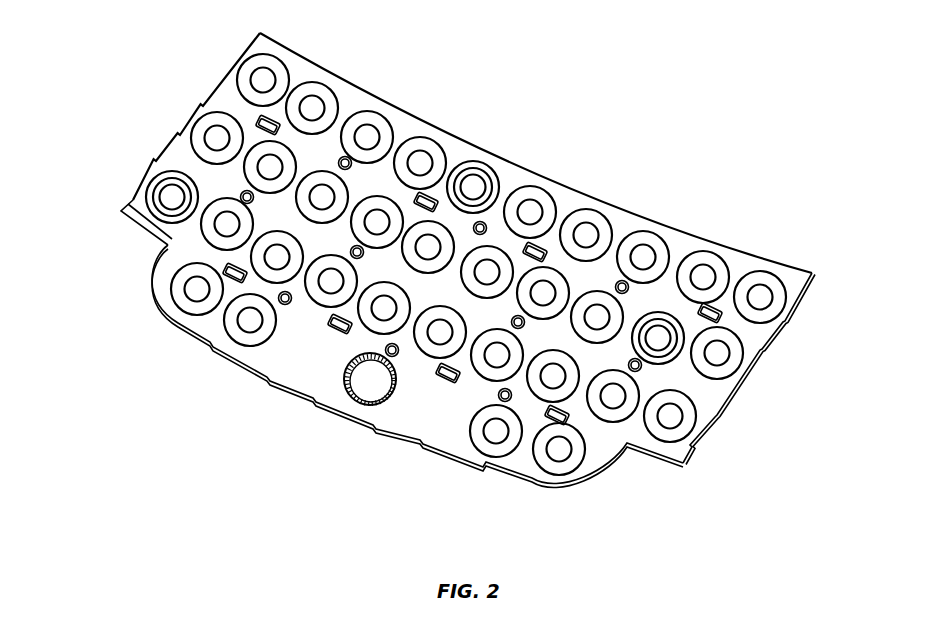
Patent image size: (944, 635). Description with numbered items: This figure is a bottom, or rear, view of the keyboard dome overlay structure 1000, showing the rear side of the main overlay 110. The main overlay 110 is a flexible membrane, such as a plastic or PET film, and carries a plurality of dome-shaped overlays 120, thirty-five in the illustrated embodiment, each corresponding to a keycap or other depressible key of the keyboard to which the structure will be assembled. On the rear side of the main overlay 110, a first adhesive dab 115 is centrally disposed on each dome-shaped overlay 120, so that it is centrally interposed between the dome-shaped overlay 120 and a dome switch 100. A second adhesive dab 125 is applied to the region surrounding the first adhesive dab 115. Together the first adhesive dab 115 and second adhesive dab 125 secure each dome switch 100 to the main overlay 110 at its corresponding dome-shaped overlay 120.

The keyboard dome overlay structure 1000 is at (443, 260).
The main overlay 110 is at (232, 103).
The first adhesive dab 115 is at (443, 264).
The dome-shaped overlay 120 is at (160, 205).
The second adhesive dab 125 is at (152, 200).
The dome switch 100 is at (370, 382).